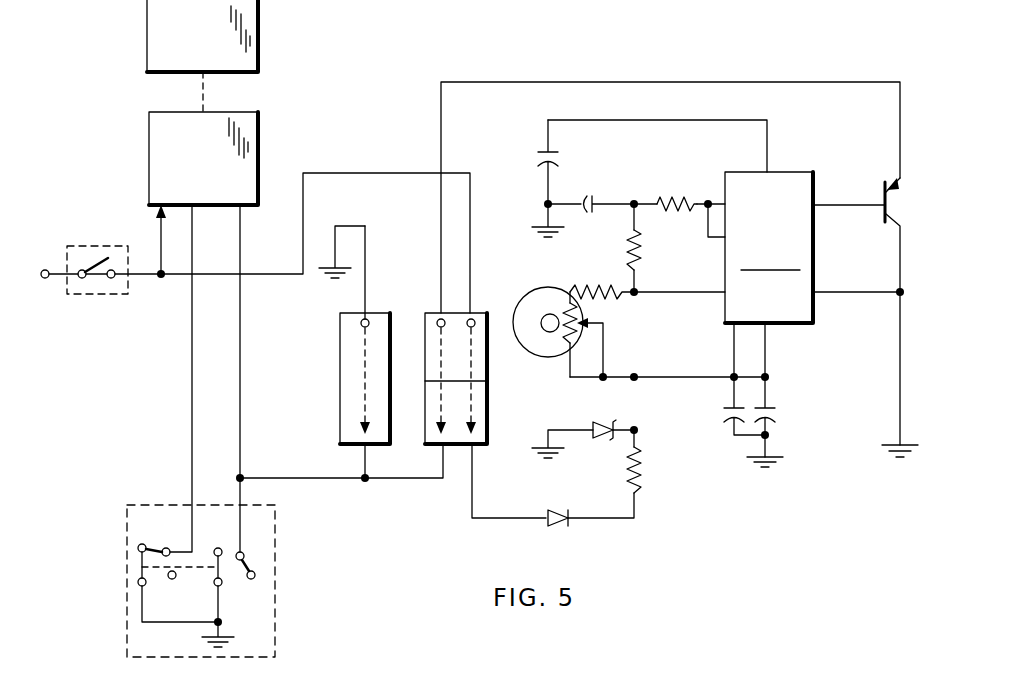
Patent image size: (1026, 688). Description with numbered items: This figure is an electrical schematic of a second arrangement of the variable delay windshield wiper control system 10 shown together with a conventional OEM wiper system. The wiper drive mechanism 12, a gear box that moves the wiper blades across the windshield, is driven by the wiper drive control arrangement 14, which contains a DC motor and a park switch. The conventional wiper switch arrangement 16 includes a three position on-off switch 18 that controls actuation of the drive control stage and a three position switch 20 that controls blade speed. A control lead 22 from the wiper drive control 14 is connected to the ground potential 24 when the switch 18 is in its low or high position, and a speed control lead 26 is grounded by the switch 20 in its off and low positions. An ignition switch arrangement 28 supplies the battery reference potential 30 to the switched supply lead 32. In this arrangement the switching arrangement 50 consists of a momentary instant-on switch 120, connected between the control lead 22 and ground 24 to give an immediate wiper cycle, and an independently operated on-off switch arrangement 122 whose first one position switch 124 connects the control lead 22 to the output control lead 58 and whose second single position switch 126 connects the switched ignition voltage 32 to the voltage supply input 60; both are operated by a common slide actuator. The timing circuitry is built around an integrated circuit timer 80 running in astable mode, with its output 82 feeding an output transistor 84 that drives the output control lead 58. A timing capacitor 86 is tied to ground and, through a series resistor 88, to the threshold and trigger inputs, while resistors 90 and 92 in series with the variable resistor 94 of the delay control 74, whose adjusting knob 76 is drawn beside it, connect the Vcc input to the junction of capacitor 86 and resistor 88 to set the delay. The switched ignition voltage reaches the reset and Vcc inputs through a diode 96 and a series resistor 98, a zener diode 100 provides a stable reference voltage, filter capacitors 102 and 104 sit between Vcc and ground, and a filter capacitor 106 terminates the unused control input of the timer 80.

The variable delay windshield wiper control system 10 is at (645, 65).
The wiper drive mechanism 12 is at (147, 48).
The wiper drive control arrangement 14 is at (149, 118).
The wiper switch arrangement 16 is at (186, 667).
The on-off switch 18 is at (332, 598).
The speed switch 20 is at (116, 553).
The control lead 22 is at (240, 419).
The ground potential 24 is at (222, 622).
The speed control lead 26 is at (192, 445).
The ignition switch arrangement 28 is at (105, 215).
The reference potential 30 is at (45, 283).
The switched supply lead 32 is at (303, 173).
The switching arrangement 50 is at (392, 272).
The output control lead 58 is at (705, 82).
The voltage supply input 60 is at (497, 521).
The delay control 74 is at (528, 353).
The control knob 76 is at (540, 300).
The integrated circuit timer 80 is at (812, 171).
The timer output 82 is at (843, 200).
The transistor 84 is at (880, 191).
The timing capacitor 86 is at (592, 198).
The series resistor 88 is at (677, 198).
The resistor 90 is at (641, 232).
The resistor 92 is at (600, 290).
The variable resistor 94 is at (583, 310).
The diode 96 is at (560, 528).
The series resistor 98 is at (650, 478).
The zener diode 100 is at (595, 441).
The filter capacitor 102 is at (773, 408).
The filter capacitor 104 is at (725, 405).
The filter capacitor 106 is at (545, 152).
The instant-on switch 120 is at (330, 360).
The on-off switch arrangement 122 is at (532, 390).
The first one position switch 124 is at (438, 316).
The second single position switch 126 is at (474, 317).